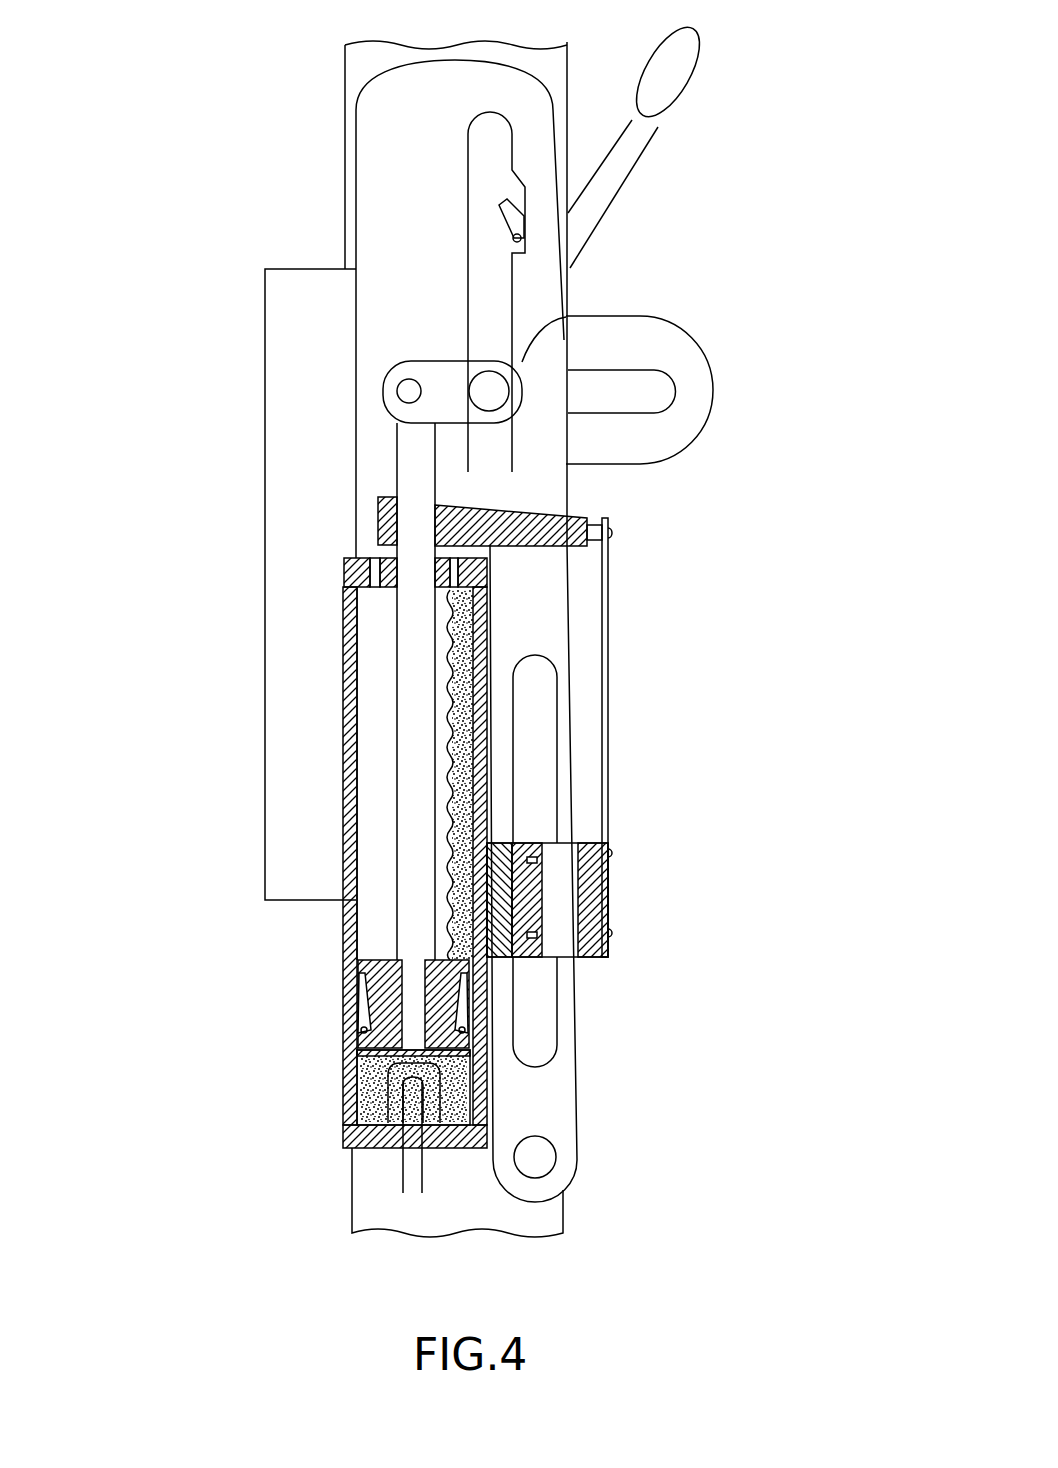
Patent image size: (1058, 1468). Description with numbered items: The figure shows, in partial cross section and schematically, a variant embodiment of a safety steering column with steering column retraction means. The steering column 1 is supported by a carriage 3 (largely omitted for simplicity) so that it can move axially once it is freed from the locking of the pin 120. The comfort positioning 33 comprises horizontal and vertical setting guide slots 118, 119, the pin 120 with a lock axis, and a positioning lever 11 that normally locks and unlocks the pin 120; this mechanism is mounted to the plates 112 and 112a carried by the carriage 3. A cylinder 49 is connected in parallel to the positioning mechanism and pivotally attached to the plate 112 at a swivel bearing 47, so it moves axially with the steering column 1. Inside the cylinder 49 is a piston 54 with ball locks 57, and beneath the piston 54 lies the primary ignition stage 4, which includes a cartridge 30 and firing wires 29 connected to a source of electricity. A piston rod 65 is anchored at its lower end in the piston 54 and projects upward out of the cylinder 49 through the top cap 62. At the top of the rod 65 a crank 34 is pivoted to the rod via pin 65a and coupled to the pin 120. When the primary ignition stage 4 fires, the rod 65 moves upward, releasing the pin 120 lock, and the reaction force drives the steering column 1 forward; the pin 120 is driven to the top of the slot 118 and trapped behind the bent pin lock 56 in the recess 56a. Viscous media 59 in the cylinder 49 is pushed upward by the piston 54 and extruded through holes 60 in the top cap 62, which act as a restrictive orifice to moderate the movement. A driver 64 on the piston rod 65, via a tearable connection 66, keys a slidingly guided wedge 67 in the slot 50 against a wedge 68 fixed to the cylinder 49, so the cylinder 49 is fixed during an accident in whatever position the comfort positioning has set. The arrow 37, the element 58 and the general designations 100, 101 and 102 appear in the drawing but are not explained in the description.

The steering column 1 is at (555, 1210).
The carriage 3 is at (283, 432).
The primary ignition stage 4 is at (356, 1070).
The positioning lever 11 is at (690, 80).
The firing wires 29 is at (403, 1177).
The cartridge 30 is at (383, 1093).
The comfort positioning 33 is at (668, 212).
The crank 34 is at (448, 375).
The flow direction arrow 37 is at (468, 1160).
The swivel bearing 47 is at (537, 1160).
The cylinder 49 is at (375, 683).
The slot 50 is at (542, 758).
The piston 54 is at (385, 967).
The bent pin lock 56 is at (506, 207).
The recess 56a is at (521, 197).
The ball locks 57 is at (358, 1020).
The spring filler 58 is at (467, 643).
The viscous media 59 is at (470, 710).
The holes 60 is at (377, 590).
The top cap 62 is at (373, 562).
The driver 64 is at (548, 520).
The piston rod 65 is at (410, 452).
The pin 65a is at (412, 392).
The tearable connection 66 is at (608, 790).
The slidingly guided wedge 67 is at (545, 962).
The wedge 68 is at (522, 860).
The actuator assembly 100 is at (720, 988).
The device 101 is at (281, 213).
The sensor section 102 is at (290, 1060).
The plate 112 is at (568, 1098).
The plate 112a is at (697, 377).
The horizontal setting guide slot 118 is at (492, 303).
The vertical setting guide slot 119 is at (660, 395).
The pin 120 is at (490, 390).